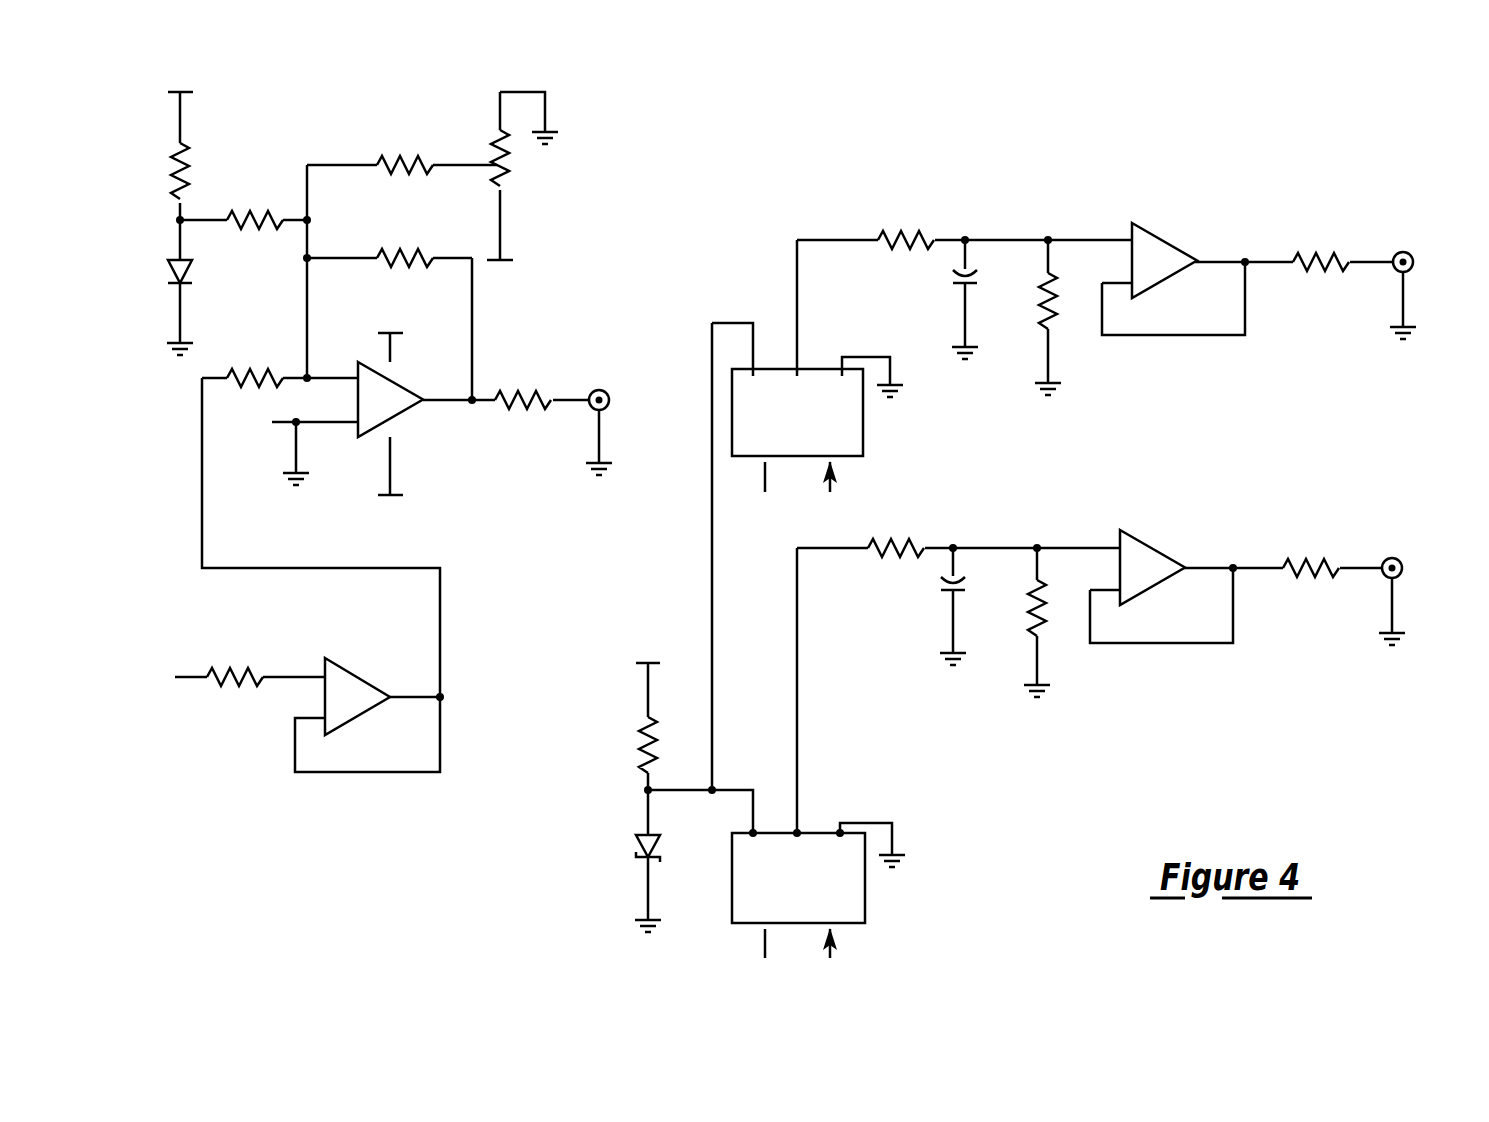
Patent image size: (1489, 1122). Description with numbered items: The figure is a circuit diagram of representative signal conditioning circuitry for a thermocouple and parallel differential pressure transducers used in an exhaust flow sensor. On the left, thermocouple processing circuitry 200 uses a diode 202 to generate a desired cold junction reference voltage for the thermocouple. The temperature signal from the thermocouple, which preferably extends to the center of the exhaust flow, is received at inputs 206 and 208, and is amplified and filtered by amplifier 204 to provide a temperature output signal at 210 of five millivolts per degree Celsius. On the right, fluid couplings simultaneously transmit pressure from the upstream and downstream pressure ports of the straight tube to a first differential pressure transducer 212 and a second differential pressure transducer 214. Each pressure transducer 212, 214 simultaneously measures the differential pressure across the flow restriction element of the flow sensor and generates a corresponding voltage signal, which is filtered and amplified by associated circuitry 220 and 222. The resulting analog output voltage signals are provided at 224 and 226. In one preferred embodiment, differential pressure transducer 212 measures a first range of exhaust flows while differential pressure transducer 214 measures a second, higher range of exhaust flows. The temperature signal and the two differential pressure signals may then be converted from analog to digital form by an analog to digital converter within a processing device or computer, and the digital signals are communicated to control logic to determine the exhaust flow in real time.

The thermocouple processing circuitry 200 is at (425, 121).
The diode 202 is at (153, 215).
The amplifier 204 is at (448, 478).
The input 206 is at (173, 704).
The input 208 is at (242, 450).
The temperature output signal 210 is at (585, 423).
The first differential pressure transducer 212 is at (863, 428).
The second differential pressure transducer 214 is at (818, 833).
The associated circuitry 220 is at (877, 196).
The associated circuitry 222 is at (1133, 687).
The analog output voltage signal 224 is at (1410, 224).
The analog output voltage signal 226 is at (1400, 535).